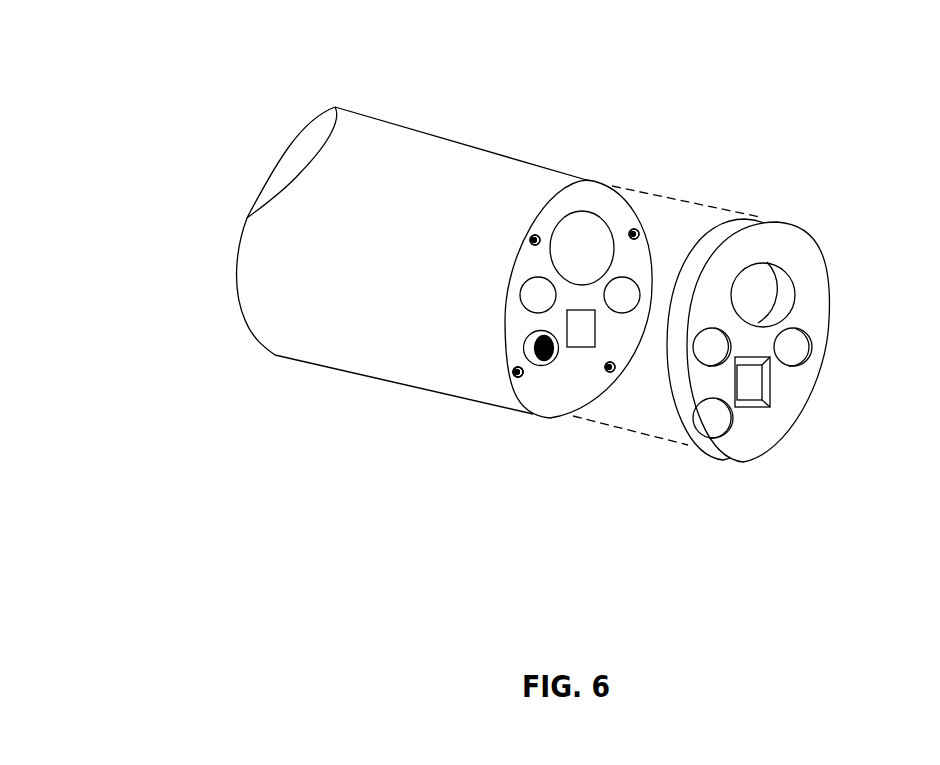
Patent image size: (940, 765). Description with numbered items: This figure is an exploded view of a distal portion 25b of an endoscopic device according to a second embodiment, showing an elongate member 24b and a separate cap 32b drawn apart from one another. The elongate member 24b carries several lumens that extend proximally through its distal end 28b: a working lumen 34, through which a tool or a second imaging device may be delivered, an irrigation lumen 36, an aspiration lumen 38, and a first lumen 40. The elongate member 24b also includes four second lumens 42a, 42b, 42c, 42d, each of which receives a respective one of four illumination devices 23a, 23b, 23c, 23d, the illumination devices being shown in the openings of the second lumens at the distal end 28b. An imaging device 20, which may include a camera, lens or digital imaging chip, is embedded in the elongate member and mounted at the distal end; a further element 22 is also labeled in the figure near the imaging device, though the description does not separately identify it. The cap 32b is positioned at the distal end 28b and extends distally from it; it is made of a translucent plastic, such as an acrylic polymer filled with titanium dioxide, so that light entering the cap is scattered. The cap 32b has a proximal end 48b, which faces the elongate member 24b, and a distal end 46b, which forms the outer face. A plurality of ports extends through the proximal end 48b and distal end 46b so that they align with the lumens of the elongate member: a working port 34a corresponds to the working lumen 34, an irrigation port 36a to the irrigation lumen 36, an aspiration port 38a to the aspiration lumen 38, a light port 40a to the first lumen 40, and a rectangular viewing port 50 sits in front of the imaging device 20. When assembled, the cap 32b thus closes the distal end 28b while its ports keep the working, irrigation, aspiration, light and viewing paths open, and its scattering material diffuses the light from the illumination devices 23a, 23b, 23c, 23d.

The distal portion 25b is at (234, 82).
The elongate member 24b is at (382, 118).
The distal end 28b is at (600, 180).
The cap 32b is at (778, 221).
The proximal end 48b is at (737, 218).
The distal end 46b is at (810, 268).
The working lumen 34 is at (600, 233).
The working port 34a is at (768, 297).
The irrigation lumen 36 is at (620, 296).
The irrigation port 36a is at (795, 351).
The aspiration lumen 38 is at (537, 296).
The aspiration port 38a is at (694, 341).
The first lumen 40 is at (513, 365).
The light port 40a is at (713, 430).
The pin port 22 is at (530, 345).
The imaging device 20 is at (568, 347).
The viewing port 50 is at (769, 406).
The second lumen 42a is at (531, 241).
The second lumen 42b is at (638, 233).
The second lumen 42c is at (520, 378).
The second lumen 42d is at (613, 373).
The illumination device 23a is at (534, 237).
The illumination device 23b is at (639, 234).
The illumination device 23c is at (515, 379).
The illumination device 23d is at (607, 373).